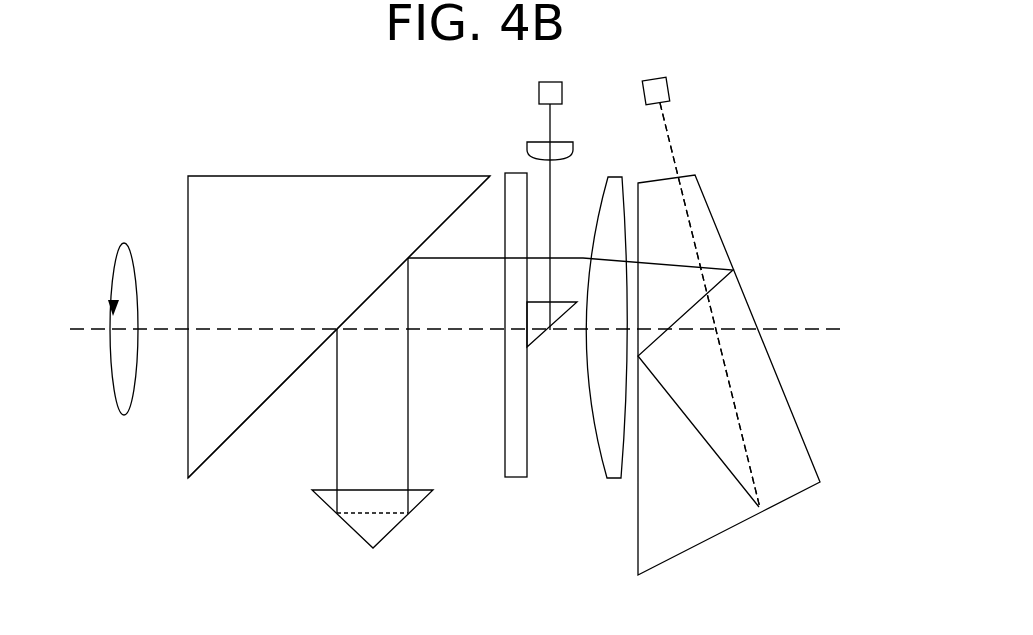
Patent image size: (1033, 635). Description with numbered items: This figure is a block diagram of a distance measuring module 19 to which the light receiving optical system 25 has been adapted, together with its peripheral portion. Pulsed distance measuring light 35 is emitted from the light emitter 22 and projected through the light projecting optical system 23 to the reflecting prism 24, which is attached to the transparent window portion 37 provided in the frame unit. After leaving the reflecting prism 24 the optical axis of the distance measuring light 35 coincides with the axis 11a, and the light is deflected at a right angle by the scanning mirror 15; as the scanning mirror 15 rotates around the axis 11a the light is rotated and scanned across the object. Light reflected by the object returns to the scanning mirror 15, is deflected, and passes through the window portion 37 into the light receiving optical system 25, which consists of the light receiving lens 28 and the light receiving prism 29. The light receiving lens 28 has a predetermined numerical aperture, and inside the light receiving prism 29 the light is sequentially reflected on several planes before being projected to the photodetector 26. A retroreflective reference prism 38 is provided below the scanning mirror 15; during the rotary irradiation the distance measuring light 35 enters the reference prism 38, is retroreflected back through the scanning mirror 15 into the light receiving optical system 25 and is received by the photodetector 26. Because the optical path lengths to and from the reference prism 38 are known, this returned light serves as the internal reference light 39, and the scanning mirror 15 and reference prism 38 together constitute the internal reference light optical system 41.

The axis 11a is at (75, 327).
The scanning mirror 15 is at (257, 176).
The distance measuring module 19 is at (597, 515).
The light emitter 22 is at (537, 92).
The light projecting optical system 23 is at (528, 124).
The reflecting prism 24 is at (545, 348).
The light receiving optical system 25 is at (705, 138).
The photodetector 26 is at (670, 90).
The light receiving lens 28 is at (600, 452).
The light receiving prism 29 is at (748, 293).
The distance measuring light 35 is at (552, 122).
The window portion 37 is at (500, 407).
The reference prism 38 is at (398, 530).
The internal reference light 39 is at (664, 137).
The internal reference light optical system 41 is at (283, 470).